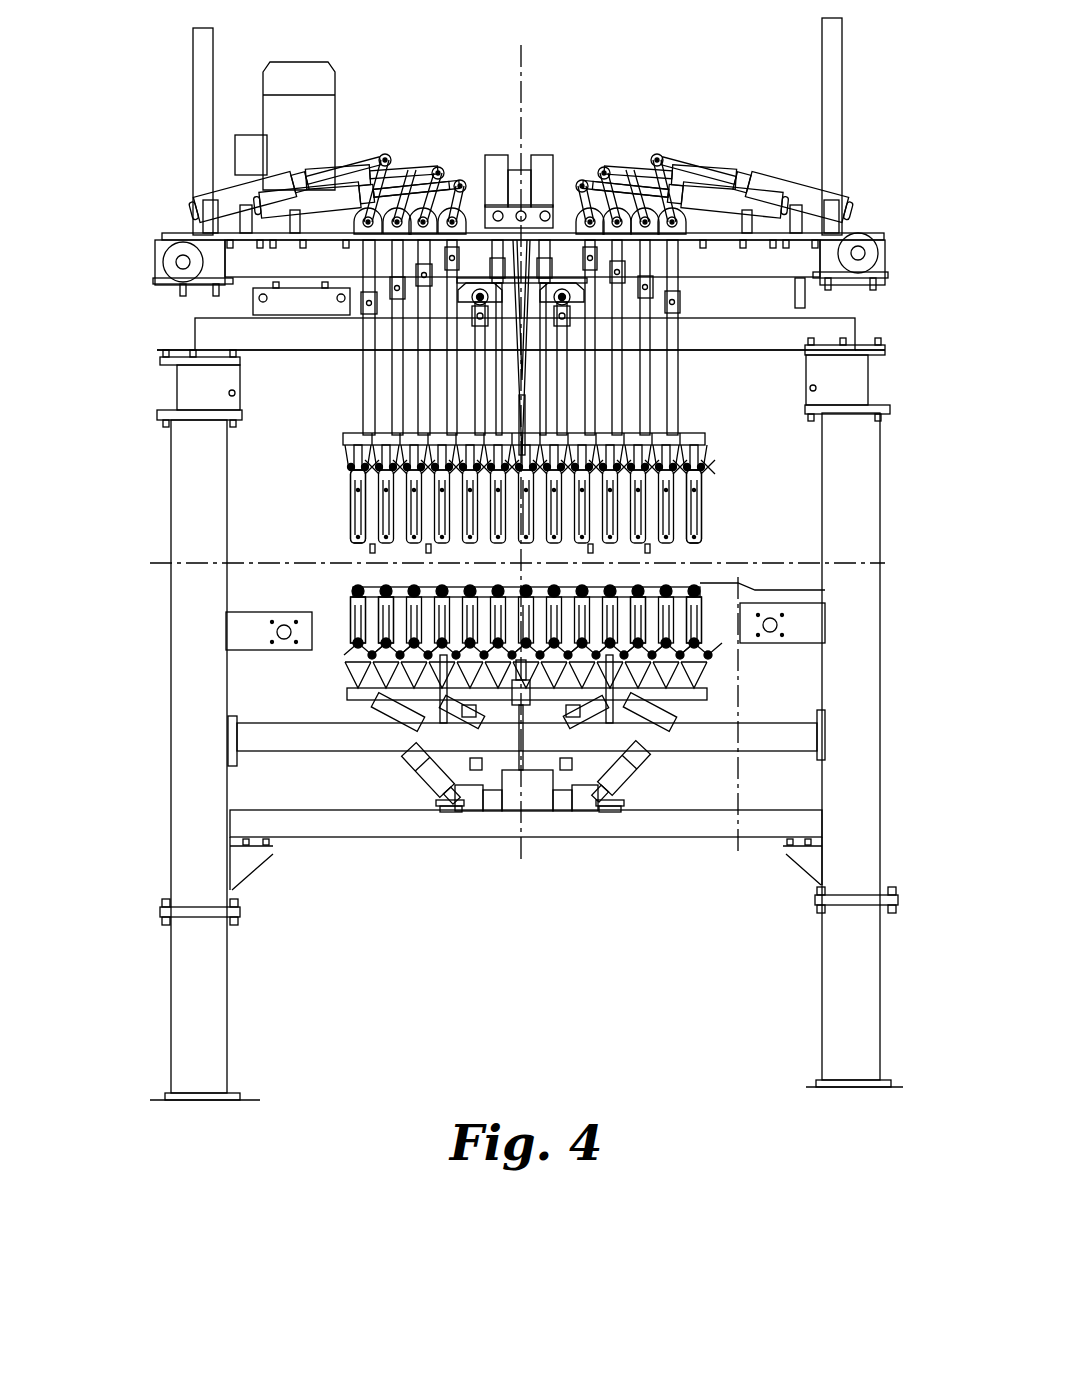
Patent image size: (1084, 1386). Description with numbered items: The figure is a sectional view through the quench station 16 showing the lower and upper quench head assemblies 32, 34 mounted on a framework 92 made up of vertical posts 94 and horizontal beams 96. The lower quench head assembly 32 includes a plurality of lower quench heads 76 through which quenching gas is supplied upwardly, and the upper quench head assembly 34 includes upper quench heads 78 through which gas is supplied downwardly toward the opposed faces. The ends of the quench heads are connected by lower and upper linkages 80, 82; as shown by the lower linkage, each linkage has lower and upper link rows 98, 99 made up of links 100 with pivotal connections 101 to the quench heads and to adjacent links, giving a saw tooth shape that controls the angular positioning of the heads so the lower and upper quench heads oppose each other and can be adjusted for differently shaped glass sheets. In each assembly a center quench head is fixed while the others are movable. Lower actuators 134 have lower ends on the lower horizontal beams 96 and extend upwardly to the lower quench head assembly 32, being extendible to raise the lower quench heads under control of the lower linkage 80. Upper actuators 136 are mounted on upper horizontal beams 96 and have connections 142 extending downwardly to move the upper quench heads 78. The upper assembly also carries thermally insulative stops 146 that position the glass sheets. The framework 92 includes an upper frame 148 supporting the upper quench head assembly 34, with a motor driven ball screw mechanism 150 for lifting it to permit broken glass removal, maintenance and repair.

The transfer apparatus 16 is at (630, 78).
The lower quench head assembly 32 is at (308, 662).
The upper quench head assembly 34 is at (333, 477).
The lower quench head 76 is at (670, 648).
The upper quench head 78 is at (640, 520).
The lower linkage 80 is at (699, 604).
The upper linkage 82 is at (368, 475).
The framework 92 is at (888, 692).
The vertical post 94 is at (186, 756).
The horizontal beam 96 is at (617, 828).
The lower link row 98 is at (352, 652).
The upper link row 99 is at (370, 590).
The link 100 is at (423, 637).
The pivotal connection 101 is at (433, 592).
The lower actuator 134 is at (437, 724).
The upper actuator 136 is at (330, 190).
The connection 142 is at (425, 420).
The thermally insulative stop 146 is at (428, 554).
The upper frame 148 is at (252, 263).
The motor driven ball screw mechanism 150 is at (166, 232).